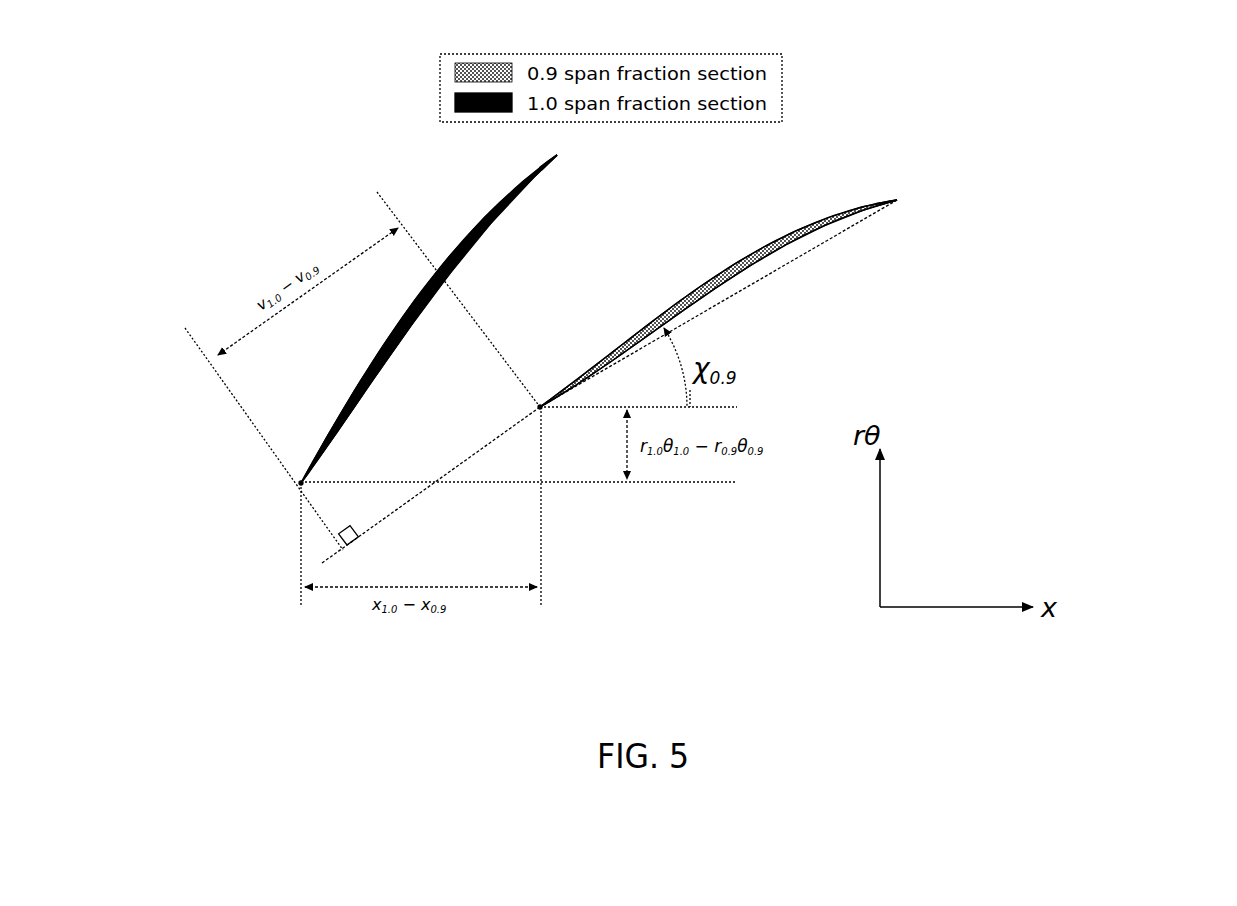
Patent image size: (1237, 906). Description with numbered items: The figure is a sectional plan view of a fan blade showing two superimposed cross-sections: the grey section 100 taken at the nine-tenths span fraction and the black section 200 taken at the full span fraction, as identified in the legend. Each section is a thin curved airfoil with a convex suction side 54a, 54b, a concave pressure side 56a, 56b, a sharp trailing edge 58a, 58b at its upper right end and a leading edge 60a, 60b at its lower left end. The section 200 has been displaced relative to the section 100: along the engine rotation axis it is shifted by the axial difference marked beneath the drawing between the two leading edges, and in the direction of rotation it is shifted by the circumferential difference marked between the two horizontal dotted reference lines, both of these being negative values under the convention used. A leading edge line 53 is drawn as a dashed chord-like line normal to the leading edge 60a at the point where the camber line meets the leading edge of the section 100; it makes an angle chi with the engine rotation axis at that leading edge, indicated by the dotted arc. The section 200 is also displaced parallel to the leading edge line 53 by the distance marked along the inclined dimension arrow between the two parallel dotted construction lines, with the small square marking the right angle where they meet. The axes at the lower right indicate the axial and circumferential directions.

The r0.9 span fraction section 100 is at (866, 250).
The r1.0 span fraction section 200 is at (455, 216).
The leading edge line 53 is at (615, 350).
The suction side 54a is at (733, 260).
The suction side 54b is at (369, 364).
The pressure side 56a is at (785, 259).
The pressure side 56b is at (367, 401).
The trailing edge 58a is at (898, 195).
The trailing edge 58b is at (555, 155).
The leading edge 60a is at (536, 406).
The leading edge 60b is at (296, 483).